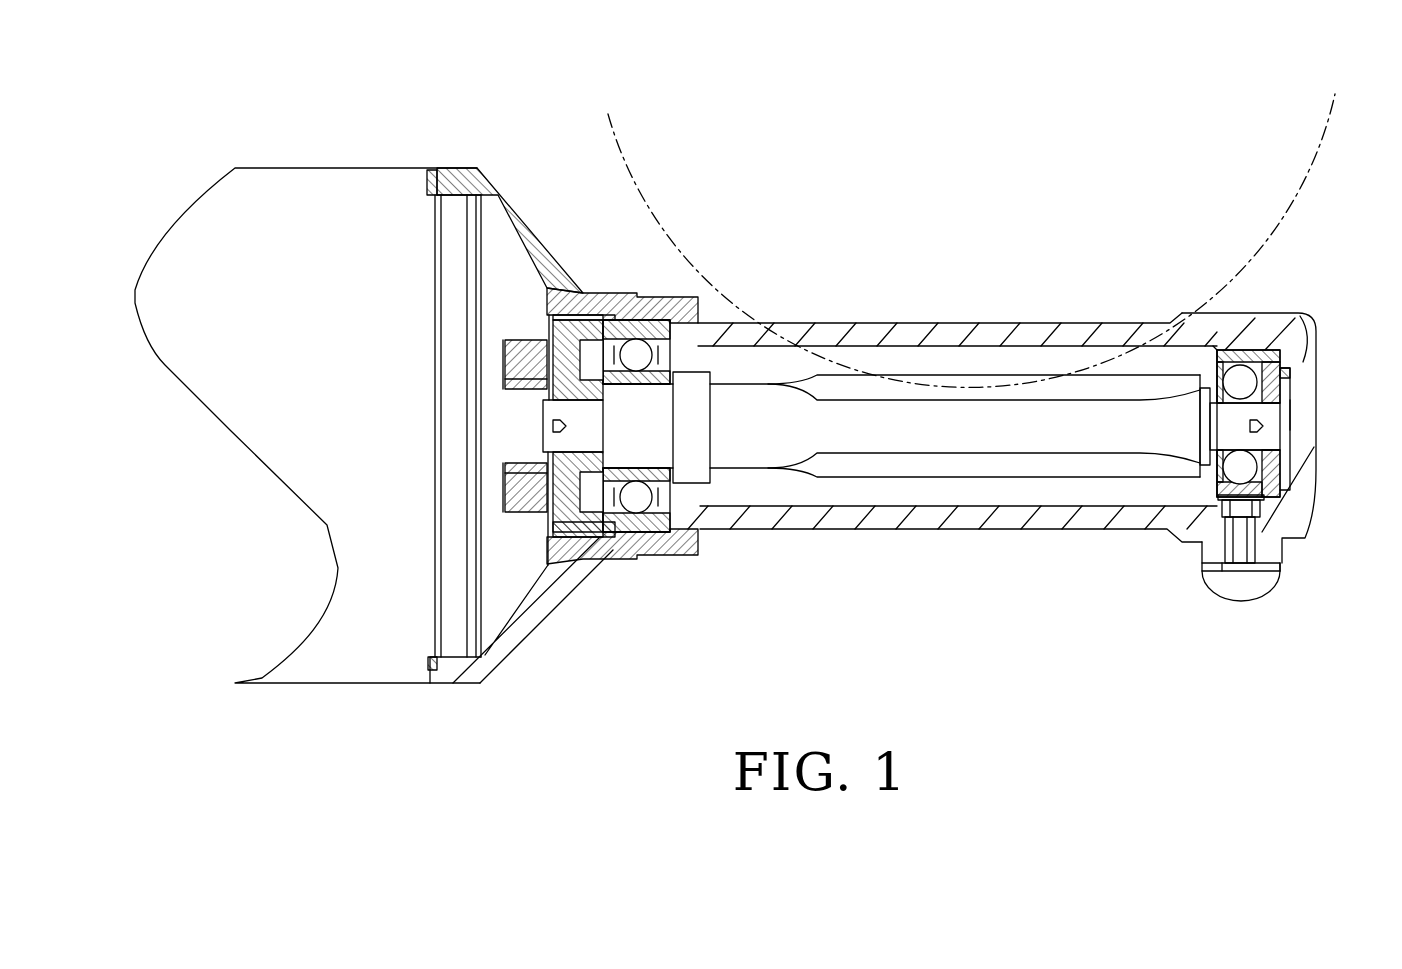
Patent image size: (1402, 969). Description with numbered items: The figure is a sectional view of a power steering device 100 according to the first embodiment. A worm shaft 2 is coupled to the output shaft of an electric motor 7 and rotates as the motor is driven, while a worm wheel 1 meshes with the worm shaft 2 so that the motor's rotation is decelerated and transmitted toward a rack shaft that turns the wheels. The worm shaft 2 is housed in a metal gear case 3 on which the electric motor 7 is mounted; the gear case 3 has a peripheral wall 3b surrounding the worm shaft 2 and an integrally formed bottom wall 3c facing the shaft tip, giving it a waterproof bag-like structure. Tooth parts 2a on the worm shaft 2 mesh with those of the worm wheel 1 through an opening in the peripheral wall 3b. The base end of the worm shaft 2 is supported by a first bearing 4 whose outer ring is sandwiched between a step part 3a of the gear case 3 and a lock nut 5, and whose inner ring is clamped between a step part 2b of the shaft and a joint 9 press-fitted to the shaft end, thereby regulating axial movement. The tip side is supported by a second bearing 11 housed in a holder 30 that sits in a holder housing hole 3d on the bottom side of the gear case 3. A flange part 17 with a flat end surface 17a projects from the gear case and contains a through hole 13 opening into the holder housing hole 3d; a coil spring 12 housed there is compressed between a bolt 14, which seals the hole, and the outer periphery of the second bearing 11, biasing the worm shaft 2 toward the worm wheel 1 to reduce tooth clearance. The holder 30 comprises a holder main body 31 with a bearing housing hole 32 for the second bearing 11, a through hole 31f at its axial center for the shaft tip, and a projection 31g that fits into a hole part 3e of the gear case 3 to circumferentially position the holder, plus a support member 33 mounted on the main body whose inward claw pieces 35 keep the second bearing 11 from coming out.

The power steering device 100 is at (1051, 111).
The worm wheel 1 is at (646, 189).
The worm shaft 2 is at (1068, 432).
The tooth parts 2a is at (997, 470).
The step part 2b is at (637, 330).
The gear case 3 is at (918, 536).
The step part 3a is at (657, 530).
The peripheral wall 3b is at (841, 519).
The bottom wall 3c is at (1316, 438).
The holder housing hole 3d is at (1228, 352).
The hole part 3e is at (1303, 362).
The first bearing 4 is at (622, 528).
The lock nut 5 is at (593, 523).
The electric motor 7 is at (321, 188).
The joint 9 is at (588, 384).
The second bearing 11 is at (1263, 362).
The coil spring 12 is at (1290, 538).
The through hole 13 is at (1226, 581).
The bolt 14 is at (1242, 590).
The flange part 17 is at (1205, 561).
The end surface 17a is at (1273, 576).
The holder 30 is at (1281, 488).
The holder main body 31 is at (1292, 360).
The through hole 31f is at (1292, 416).
The projection 31g is at (1292, 392).
The bearing housing hole 32 is at (1222, 356).
The support member 33 is at (1278, 352).
The claw pieces 35 is at (1222, 498).